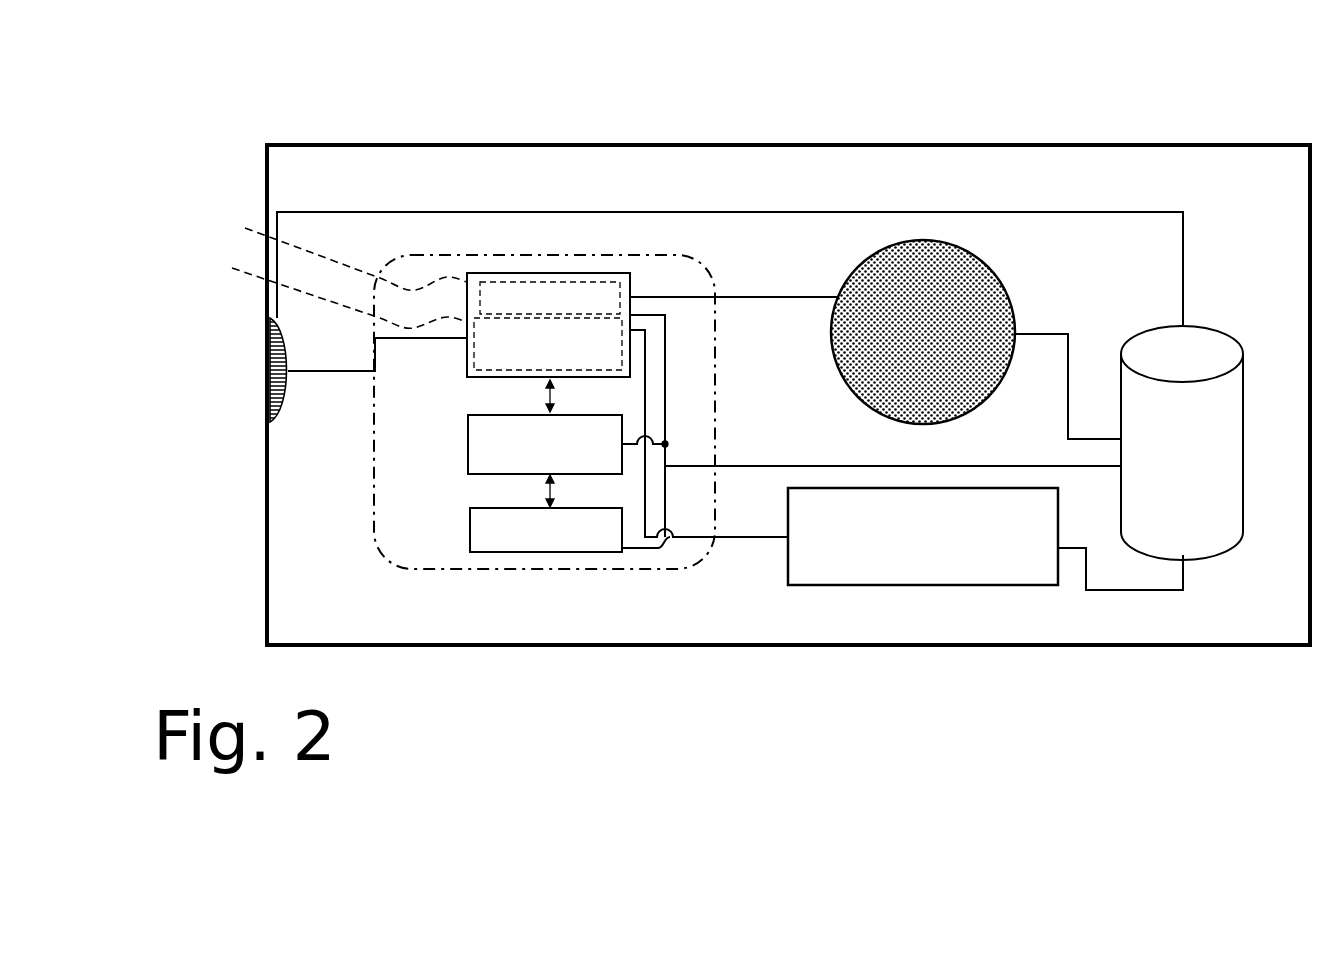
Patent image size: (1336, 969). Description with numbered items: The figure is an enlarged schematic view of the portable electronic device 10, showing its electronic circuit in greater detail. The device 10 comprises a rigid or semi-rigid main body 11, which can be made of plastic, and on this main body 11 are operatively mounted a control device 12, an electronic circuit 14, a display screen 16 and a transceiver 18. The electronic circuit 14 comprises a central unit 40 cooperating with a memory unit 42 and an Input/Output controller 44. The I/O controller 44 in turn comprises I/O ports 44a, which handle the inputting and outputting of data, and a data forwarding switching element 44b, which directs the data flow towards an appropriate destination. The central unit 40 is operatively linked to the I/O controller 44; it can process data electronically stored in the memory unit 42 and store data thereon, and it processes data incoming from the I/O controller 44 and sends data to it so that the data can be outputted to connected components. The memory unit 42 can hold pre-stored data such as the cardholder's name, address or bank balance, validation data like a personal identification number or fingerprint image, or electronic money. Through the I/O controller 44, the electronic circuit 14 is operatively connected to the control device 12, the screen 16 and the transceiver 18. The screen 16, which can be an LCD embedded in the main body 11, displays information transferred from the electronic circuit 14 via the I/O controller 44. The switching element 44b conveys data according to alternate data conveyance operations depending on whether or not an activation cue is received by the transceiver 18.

The portable electronic device 10 is at (262, 142).
The main body 11 is at (802, 650).
The control device 12 is at (993, 268).
The electronic circuit 14 is at (452, 253).
The display screen 16 is at (1000, 588).
The transceiver 18 is at (278, 423).
The central unit 40 is at (468, 447).
The memory unit 42 is at (470, 521).
The I/O controller 44 is at (607, 273).
The I/O ports 44a is at (333, 252).
The data forwarding switching element 44b is at (326, 291).